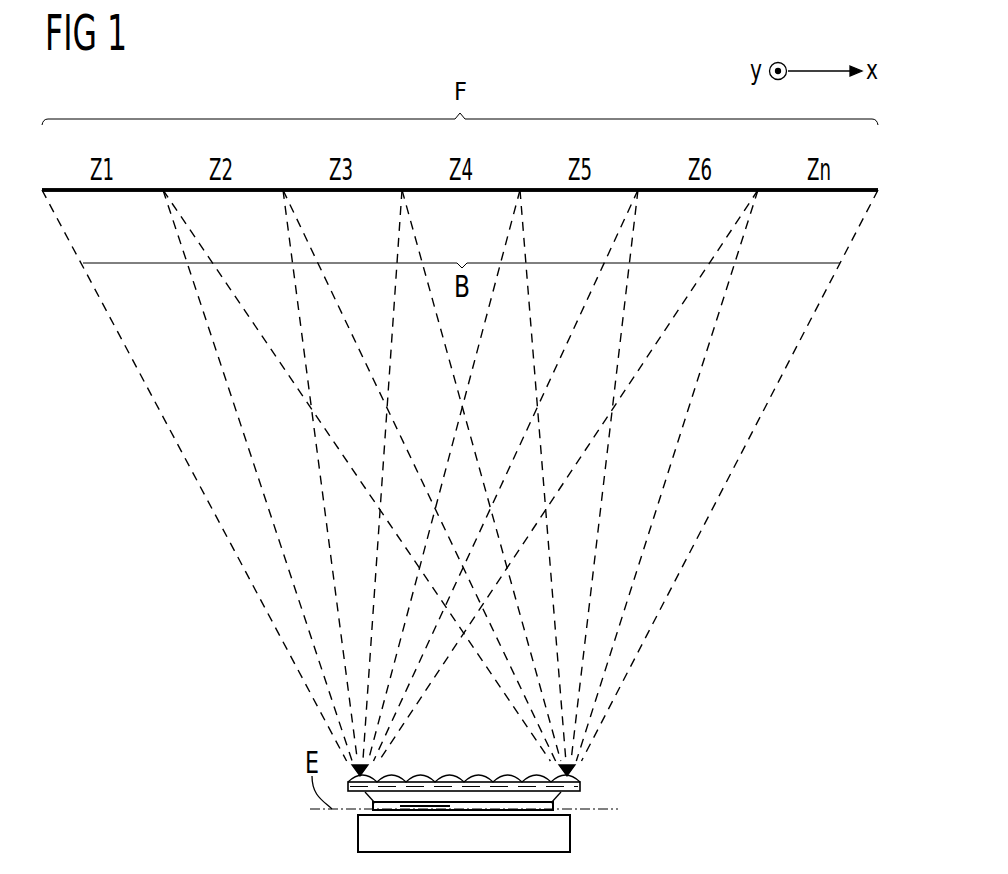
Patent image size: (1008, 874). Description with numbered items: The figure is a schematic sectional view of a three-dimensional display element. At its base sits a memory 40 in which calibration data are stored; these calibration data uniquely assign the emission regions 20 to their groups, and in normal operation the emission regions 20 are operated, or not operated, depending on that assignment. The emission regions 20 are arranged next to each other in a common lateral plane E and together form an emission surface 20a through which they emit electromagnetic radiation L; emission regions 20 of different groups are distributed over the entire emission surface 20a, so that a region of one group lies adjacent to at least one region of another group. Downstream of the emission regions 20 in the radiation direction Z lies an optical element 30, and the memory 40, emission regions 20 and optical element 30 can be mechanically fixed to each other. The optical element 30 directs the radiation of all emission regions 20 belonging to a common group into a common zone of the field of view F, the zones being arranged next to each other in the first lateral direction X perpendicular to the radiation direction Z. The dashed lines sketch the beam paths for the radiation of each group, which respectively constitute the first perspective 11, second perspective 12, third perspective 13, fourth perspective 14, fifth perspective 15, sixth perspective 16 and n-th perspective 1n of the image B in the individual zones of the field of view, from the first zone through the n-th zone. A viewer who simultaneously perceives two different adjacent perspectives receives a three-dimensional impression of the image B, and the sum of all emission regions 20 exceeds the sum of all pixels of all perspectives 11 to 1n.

The first perspective 11 is at (102, 214).
The second perspective 12 is at (223, 214).
The third perspective 13 is at (342, 214).
The fourth perspective 14 is at (461, 214).
The fifth perspective 15 is at (579, 214).
The sixth perspective 16 is at (698, 214).
The n-th perspective 1n is at (818, 214).
The emission regions 20 is at (556, 804).
The emission surface 20a is at (420, 800).
The optical element 30 is at (582, 782).
The memory 40 is at (563, 833).